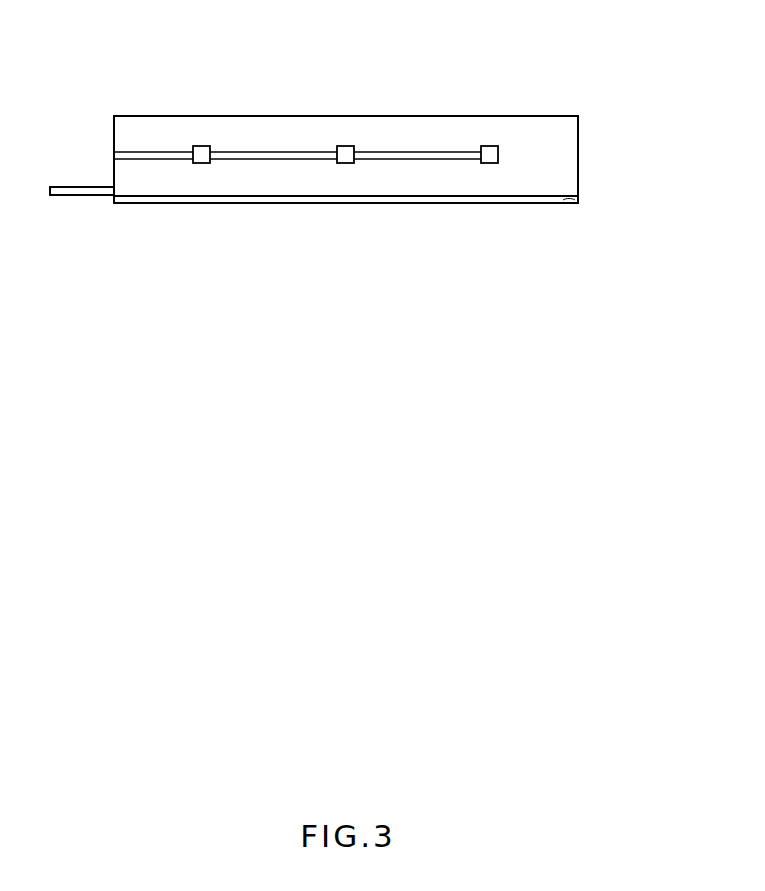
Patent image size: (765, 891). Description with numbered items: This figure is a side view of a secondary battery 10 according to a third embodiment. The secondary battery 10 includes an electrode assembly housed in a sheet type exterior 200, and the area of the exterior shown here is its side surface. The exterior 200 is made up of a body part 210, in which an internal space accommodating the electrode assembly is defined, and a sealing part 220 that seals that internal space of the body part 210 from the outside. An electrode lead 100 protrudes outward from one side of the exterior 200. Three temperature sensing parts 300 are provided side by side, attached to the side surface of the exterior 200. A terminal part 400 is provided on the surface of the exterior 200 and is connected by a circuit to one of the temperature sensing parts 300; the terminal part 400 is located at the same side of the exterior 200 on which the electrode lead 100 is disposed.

The secondary battery 10 is at (371, 139).
The electrode lead 100 is at (80, 196).
The sheet type exterior 200 is at (404, 169).
The body part 210 is at (562, 155).
The sealing part 220 is at (379, 209).
The temperature sensing parts 300 is at (344, 146).
The terminal part 400 is at (114, 152).